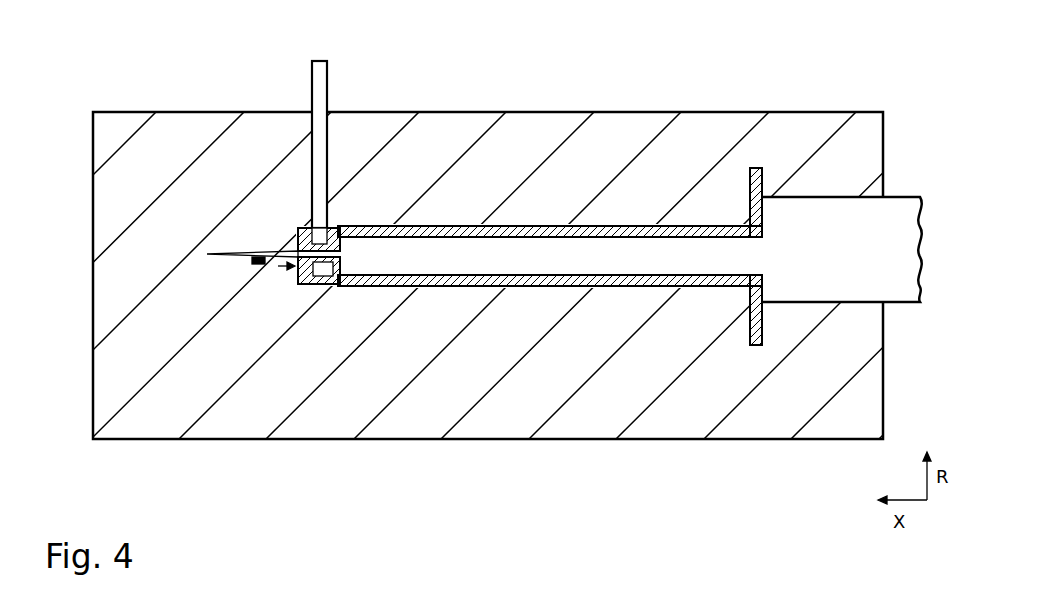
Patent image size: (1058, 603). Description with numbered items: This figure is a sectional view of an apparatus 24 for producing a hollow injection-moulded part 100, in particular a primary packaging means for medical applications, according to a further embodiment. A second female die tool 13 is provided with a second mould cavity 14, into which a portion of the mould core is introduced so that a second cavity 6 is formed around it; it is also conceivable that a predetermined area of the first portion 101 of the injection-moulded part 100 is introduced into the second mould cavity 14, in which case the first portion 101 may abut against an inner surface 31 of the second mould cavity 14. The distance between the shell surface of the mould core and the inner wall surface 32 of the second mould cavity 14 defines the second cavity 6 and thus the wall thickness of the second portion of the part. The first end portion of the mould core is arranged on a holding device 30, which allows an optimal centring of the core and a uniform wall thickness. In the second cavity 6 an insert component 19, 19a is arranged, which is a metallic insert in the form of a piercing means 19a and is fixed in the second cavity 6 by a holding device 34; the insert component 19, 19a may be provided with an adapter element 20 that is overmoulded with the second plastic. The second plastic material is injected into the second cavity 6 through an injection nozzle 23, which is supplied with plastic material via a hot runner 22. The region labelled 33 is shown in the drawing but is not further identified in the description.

The second cavity 6 is at (320, 280).
The second female die tool 13 is at (208, 133).
The second mould cavity 14 is at (300, 272).
The insert component 19 is at (187, 377).
The piercing means 19a is at (222, 258).
The adapter element 20 is at (369, 292).
The hot runner 22 is at (312, 72).
The injection nozzle 23 is at (303, 228).
The apparatus 24 is at (529, 231).
The holding device 30 is at (900, 222).
The inner surface 31 is at (472, 287).
The inner wall surface 32 is at (287, 268).
The nozzle insert 33 is at (345, 287).
The holding device 34 is at (255, 264).
The hollow injection-moulded part 100 is at (550, 210).
The first portion 101 is at (467, 226).